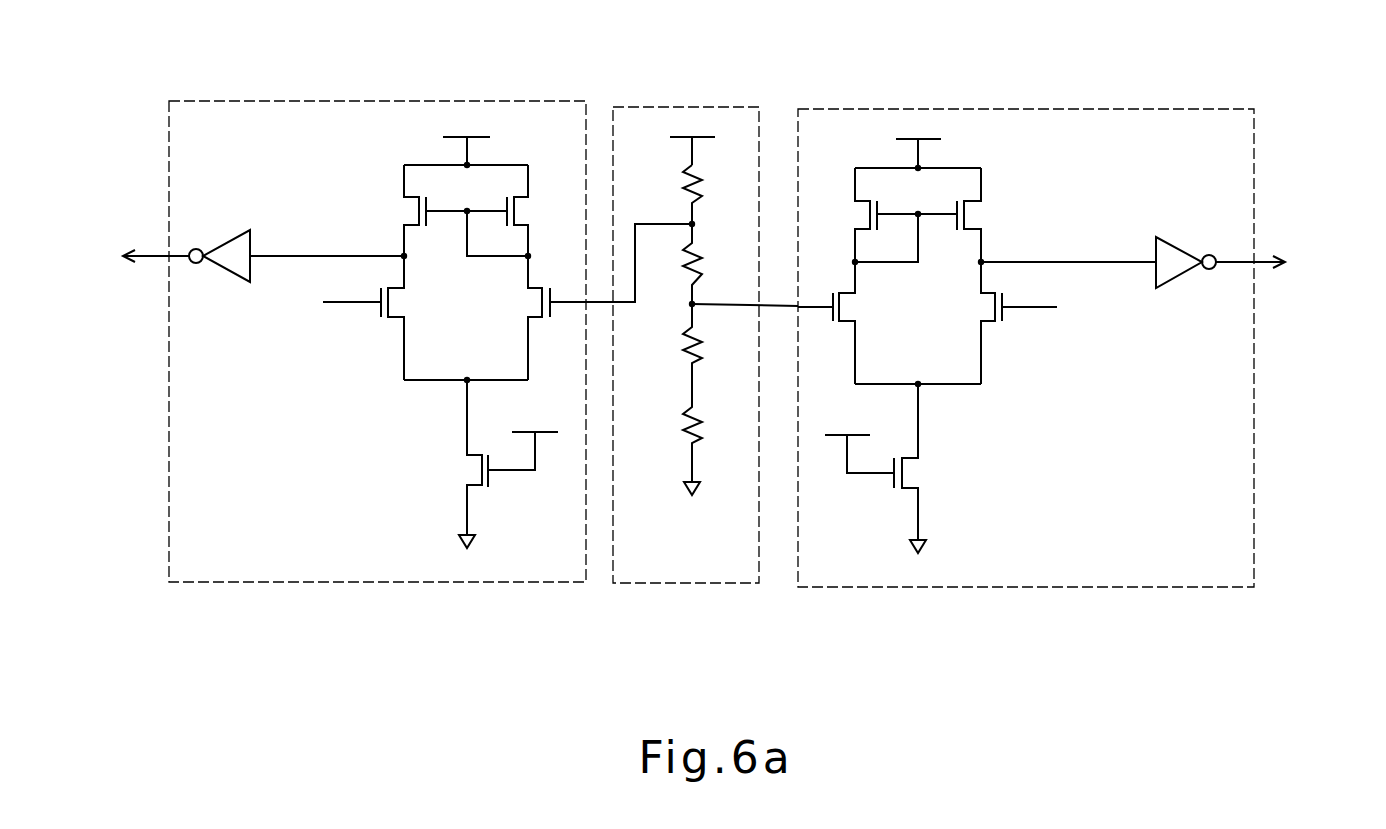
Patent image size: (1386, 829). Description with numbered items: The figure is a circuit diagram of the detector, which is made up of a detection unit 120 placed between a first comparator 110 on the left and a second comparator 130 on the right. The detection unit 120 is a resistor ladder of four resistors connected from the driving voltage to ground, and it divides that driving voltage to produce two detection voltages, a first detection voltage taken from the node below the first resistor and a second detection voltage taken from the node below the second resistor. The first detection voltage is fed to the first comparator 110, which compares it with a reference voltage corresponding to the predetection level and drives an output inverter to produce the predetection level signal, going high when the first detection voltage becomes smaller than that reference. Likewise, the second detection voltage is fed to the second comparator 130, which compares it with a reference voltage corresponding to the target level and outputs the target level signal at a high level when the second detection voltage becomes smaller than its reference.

The first comparator 110 is at (170, 101).
The detection unit 120 is at (760, 107).
The second comparator 130 is at (1254, 109).